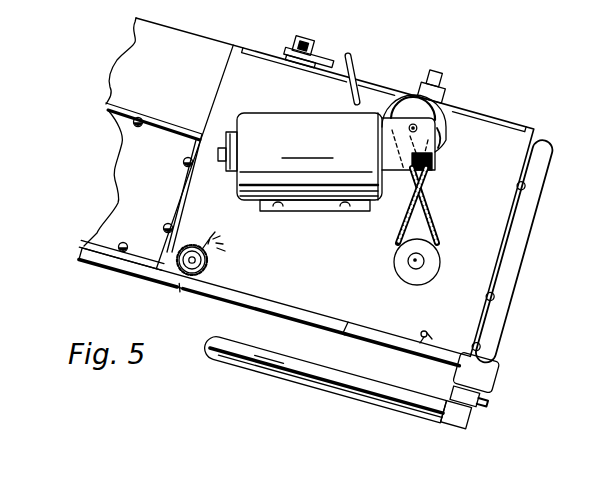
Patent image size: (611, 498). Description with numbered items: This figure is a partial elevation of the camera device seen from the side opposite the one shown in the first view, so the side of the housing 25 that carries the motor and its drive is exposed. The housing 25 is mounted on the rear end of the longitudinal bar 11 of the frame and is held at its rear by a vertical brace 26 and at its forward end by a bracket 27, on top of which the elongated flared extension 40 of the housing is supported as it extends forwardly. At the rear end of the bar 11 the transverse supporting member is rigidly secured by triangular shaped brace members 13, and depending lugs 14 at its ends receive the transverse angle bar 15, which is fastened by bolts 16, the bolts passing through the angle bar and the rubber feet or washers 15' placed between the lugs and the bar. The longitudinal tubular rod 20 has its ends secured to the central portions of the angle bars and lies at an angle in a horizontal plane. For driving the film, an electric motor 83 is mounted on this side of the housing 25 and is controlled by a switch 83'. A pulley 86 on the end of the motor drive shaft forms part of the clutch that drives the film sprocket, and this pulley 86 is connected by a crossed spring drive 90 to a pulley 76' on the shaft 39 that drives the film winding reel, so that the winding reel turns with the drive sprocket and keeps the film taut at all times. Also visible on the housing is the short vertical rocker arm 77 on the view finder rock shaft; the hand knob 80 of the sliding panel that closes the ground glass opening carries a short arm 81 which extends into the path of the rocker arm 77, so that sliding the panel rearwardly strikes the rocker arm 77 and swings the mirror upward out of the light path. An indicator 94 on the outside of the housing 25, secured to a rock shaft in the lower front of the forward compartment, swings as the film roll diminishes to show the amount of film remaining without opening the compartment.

The longitudinal bar 11 is at (268, 311).
The triangular shaped brace members 13 is at (386, 343).
The depending lugs 14 is at (476, 387).
The transverse angle bar 15 is at (464, 423).
The rubber feet or washers 15' is at (491, 404).
The bolts 16 is at (472, 416).
The longitudinal tubular rod 20 is at (282, 375).
The housing 25 is at (481, 126).
The vertical brace 26 is at (538, 215).
The bracket 27 is at (135, 180).
The shaft 39 is at (412, 271).
The elongated flared extension 40 is at (114, 77).
The pulley 76' is at (437, 265).
The rocker arm 77 is at (358, 64).
The hand knob 80 is at (308, 44).
The short arm 81 is at (320, 52).
The electric motor 83 is at (300, 146).
The switch 83' is at (444, 323).
The pulley 86 is at (447, 133).
The crossed spring drive 90 is at (430, 216).
The indicator 94 is at (188, 282).